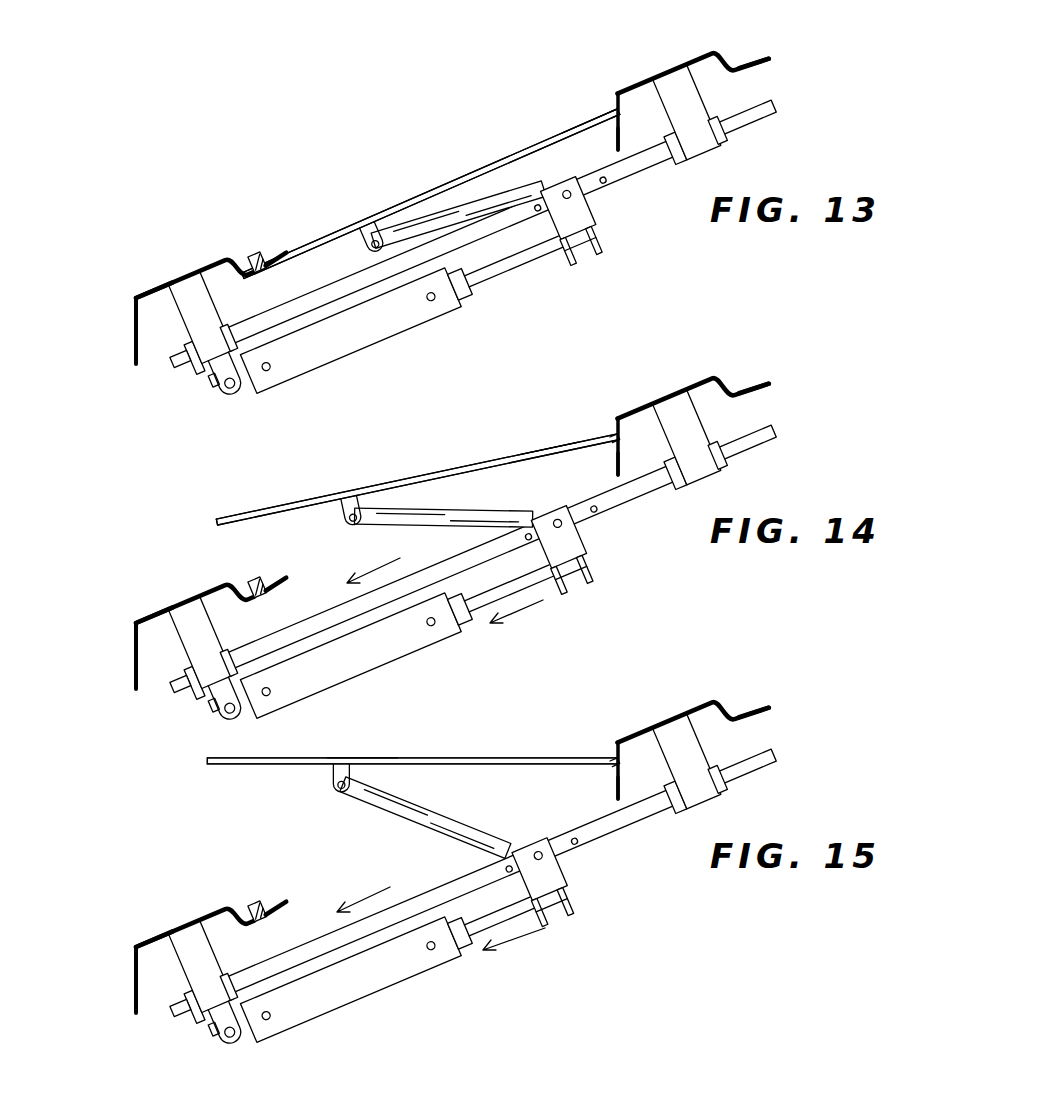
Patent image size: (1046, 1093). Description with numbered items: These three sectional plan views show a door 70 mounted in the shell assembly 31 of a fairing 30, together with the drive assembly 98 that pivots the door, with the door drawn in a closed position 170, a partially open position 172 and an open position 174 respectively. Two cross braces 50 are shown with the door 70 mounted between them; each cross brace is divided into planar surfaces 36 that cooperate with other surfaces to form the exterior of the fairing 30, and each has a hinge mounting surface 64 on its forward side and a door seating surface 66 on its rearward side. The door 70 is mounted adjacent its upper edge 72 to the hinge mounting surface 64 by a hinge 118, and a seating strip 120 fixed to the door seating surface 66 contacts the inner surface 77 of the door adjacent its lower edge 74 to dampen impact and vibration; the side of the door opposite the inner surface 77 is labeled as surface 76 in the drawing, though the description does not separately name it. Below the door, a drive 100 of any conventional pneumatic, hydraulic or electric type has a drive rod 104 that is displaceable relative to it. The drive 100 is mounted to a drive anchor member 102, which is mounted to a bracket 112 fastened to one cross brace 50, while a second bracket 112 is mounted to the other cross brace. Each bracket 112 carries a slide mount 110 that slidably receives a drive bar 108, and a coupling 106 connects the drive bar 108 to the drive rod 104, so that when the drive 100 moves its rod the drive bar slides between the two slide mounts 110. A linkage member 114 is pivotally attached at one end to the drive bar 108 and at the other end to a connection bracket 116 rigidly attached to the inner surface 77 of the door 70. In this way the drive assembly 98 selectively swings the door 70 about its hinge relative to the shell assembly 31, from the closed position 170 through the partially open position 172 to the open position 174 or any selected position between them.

In FIG. 13, the fairing 30 is at (434, 213).
In FIG. 14, the fairing 30 is at (434, 538).
In FIG. 15, the fairing 30 is at (434, 862).
In FIG. 13, the shell assembly 31 is at (134, 300).
In FIG. 14, the shell assembly 31 is at (100, 631).
In FIG. 15, the shell assembly 31 is at (100, 955).
In FIG. 13, the planar surfaces 36 is at (372, 214).
In FIG. 14, the planar surfaces 36 is at (452, 487).
In FIG. 15, the planar surfaces 36 is at (452, 811).
In FIG. 13, the cross brace 50 is at (174, 290).
In FIG. 14, the cross brace 50 is at (407, 519).
In FIG. 15, the cross brace 50 is at (407, 843).
In FIG. 13, the hinge mounting surface 64 is at (133, 328).
In FIG. 14, the hinge mounting surface 64 is at (348, 532).
In FIG. 15, the hinge mounting surface 64 is at (348, 856).
In FIG. 13, the door seating surface 66 is at (286, 267).
In FIG. 14, the door seating surface 66 is at (531, 473).
In FIG. 15, the door seating surface 66 is at (531, 797).
In FIG. 13, the door 70 is at (431, 181).
In FIG. 14, the door 70 is at (417, 461).
In FIG. 15, the door 70 is at (412, 750).
In FIG. 13, the upper edge 72 is at (614, 107).
In FIG. 14, the upper edge 72 is at (585, 425).
In FIG. 15, the upper edge 72 is at (585, 748).
In FIG. 13, the lower edge 74 is at (240, 272).
In FIG. 14, the lower edge 74 is at (196, 510).
In FIG. 15, the lower edge 74 is at (188, 772).
In FIG. 13, the cover top surface 76 is at (530, 148).
In FIG. 14, the cover top surface 76 is at (416, 475).
In FIG. 15, the cover top surface 76 is at (412, 741).
In FIG. 13, the inner surface 77 is at (490, 160).
In FIG. 14, the inner surface 77 is at (418, 482).
In FIG. 15, the inner surface 77 is at (412, 783).
In FIG. 13, the drive assembly 98 is at (454, 264).
In FIG. 14, the drive assembly 98 is at (454, 589).
In FIG. 15, the drive assembly 98 is at (454, 913).
In FIG. 13, the drive 100 is at (376, 343).
In FIG. 14, the drive 100 is at (357, 652).
In FIG. 15, the drive 100 is at (357, 976).
In FIG. 13, the drive anchor member 102 is at (210, 399).
In FIG. 14, the drive anchor member 102 is at (182, 711).
In FIG. 15, the drive anchor member 102 is at (182, 1035).
In FIG. 13, the drive rod 104 is at (520, 264).
In FIG. 14, the drive rod 104 is at (539, 592).
In FIG. 15, the drive rod 104 is at (532, 923).
In FIG. 13, the coupling 106 is at (596, 204).
In FIG. 14, the coupling 106 is at (596, 547).
In FIG. 15, the coupling 106 is at (575, 879).
In FIG. 13, the drive bar 108 is at (678, 152).
In FIG. 14, the drive bar 108 is at (707, 486).
In FIG. 15, the drive bar 108 is at (704, 810).
In FIG. 13, the slide mount 110 is at (726, 134).
In FIG. 14, the slide mount 110 is at (758, 458).
In FIG. 15, the slide mount 110 is at (758, 782).
In FIG. 13, the bracket 112 is at (175, 334).
In FIG. 14, the bracket 112 is at (462, 557).
In FIG. 15, the bracket 112 is at (462, 881).
In FIG. 13, the linkage member 114 is at (477, 205).
In FIG. 14, the linkage member 114 is at (443, 502).
In FIG. 15, the linkage member 114 is at (425, 816).
In FIG. 13, the connection bracket 116 is at (367, 223).
In FIG. 14, the connection bracket 116 is at (322, 522).
In FIG. 15, the connection bracket 116 is at (309, 786).
In FIG. 13, the hinge 118 is at (612, 138).
In FIG. 14, the hinge 118 is at (583, 476).
In FIG. 15, the hinge 118 is at (584, 798).
In FIG. 13, the seating strip 120 is at (245, 266).
In FIG. 14, the seating strip 120 is at (229, 574).
In FIG. 15, the seating strip 120 is at (234, 899).
In FIG. 13, the closed position 170 is at (572, 130).
In FIG. 14, the partially open position 172 is at (527, 426).
In FIG. 15, the open position 174 is at (382, 728).